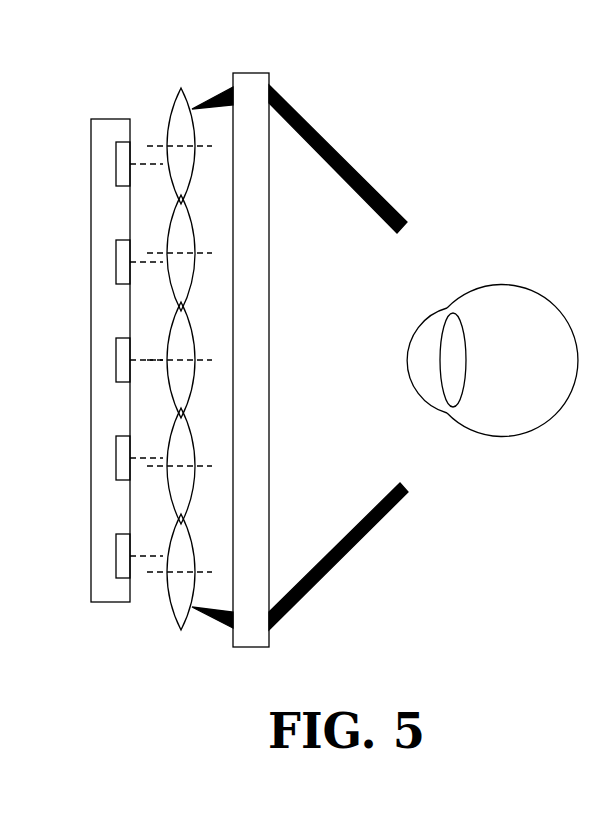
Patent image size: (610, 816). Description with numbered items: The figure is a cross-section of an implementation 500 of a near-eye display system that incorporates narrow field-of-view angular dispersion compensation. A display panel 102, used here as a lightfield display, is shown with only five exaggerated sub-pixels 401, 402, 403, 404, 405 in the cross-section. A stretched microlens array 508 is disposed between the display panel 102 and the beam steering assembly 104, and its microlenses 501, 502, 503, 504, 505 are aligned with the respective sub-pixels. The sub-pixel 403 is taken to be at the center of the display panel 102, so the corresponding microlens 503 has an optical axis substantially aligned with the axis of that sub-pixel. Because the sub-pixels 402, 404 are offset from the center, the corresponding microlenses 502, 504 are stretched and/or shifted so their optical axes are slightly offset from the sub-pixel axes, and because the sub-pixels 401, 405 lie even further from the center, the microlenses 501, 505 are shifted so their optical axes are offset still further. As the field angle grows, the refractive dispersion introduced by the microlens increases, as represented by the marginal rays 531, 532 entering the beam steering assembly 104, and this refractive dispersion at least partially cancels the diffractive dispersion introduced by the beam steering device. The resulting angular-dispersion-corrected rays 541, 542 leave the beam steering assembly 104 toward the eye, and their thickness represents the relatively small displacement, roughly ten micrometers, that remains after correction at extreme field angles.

The display panel 102 is at (108, 602).
The beam steering assembly 104 is at (248, 68).
The sub-pixel 401 is at (116, 166).
The sub-pixel 402 is at (116, 264).
The sub-pixel 403 is at (116, 362).
The sub-pixel 404 is at (116, 460).
The sub-pixel 405 is at (116, 558).
The implementation 500 is at (338, 63).
The microlens 501 is at (191, 168).
The microlens 502 is at (191, 267).
The microlens 503 is at (191, 368).
The microlens 504 is at (191, 477).
The microlens 505 is at (195, 562).
The stretched microlens array 508 is at (174, 80).
The marginal ray 531 is at (222, 93).
The marginal ray 532 is at (218, 620).
The angular-dispersion-corrected ray 541 is at (340, 155).
The angular-dispersion-corrected ray 542 is at (352, 548).